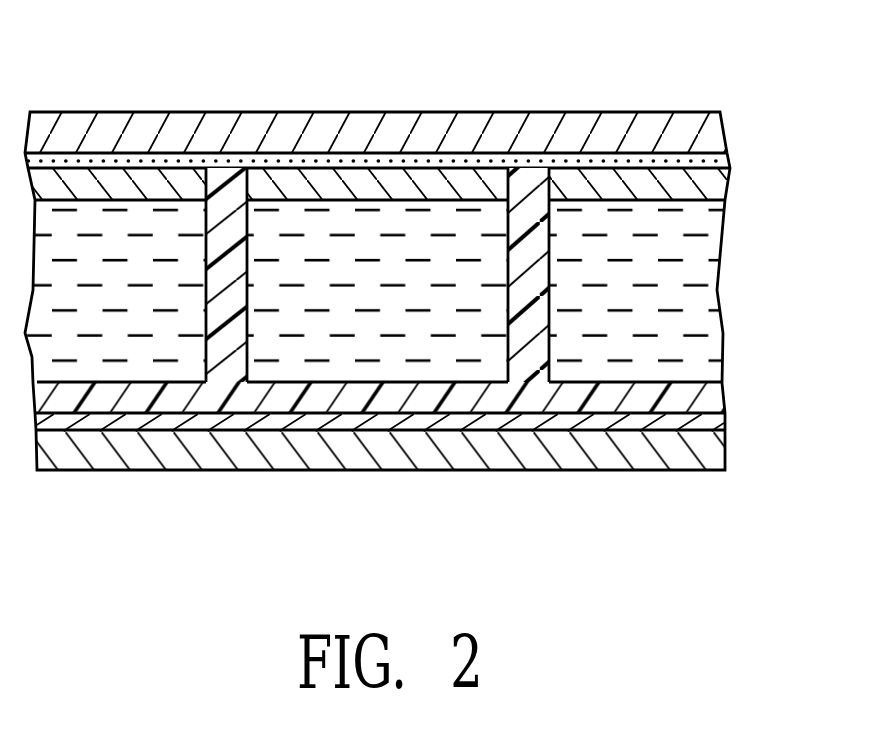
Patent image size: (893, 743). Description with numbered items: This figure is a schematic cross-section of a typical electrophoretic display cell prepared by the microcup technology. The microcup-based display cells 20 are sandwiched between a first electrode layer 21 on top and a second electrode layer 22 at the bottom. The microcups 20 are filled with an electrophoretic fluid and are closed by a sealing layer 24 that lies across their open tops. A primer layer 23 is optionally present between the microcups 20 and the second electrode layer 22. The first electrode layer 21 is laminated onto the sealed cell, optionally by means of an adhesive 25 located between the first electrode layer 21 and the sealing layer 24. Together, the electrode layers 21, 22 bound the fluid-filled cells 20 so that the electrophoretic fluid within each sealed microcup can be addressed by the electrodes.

The microcup-based display cells 20 is at (536, 282).
The first electrode layer 21 is at (460, 112).
The second electrode layer 22 is at (492, 443).
The primer layer 23 is at (202, 416).
The sealing layer 24 is at (328, 178).
The adhesive 25 is at (164, 162).